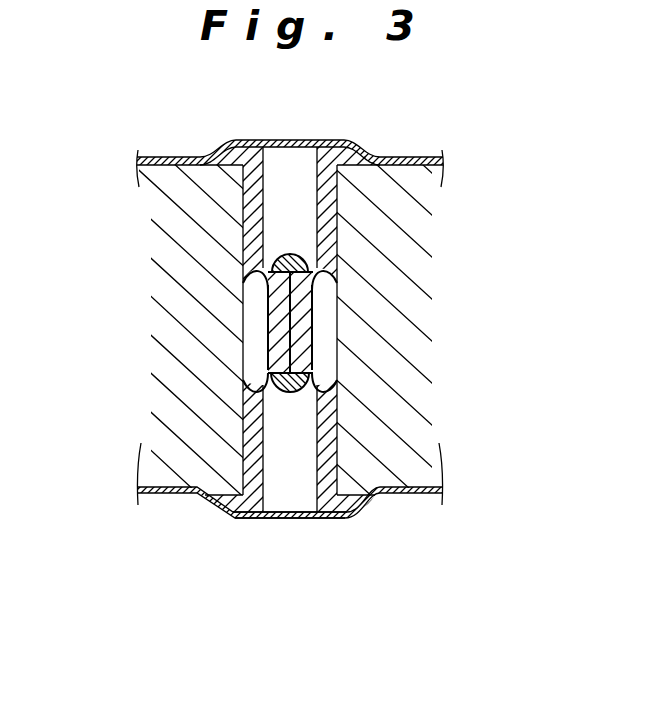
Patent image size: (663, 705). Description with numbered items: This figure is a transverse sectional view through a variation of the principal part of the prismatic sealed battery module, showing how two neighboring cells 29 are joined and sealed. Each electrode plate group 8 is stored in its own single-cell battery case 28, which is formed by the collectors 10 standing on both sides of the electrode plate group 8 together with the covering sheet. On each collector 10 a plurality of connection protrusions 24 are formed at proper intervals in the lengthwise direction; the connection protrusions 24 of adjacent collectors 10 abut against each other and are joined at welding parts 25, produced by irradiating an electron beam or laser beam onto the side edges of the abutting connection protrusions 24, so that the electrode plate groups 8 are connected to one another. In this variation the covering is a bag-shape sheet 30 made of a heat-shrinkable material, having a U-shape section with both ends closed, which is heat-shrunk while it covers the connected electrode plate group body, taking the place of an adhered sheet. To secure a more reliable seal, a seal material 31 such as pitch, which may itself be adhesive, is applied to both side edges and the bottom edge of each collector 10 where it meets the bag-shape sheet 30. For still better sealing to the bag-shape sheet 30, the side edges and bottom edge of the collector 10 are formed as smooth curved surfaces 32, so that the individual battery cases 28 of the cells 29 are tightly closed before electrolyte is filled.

The electrode plate group 8 is at (163, 317).
The collector 10 is at (300, 518).
The connection protrusion 24 is at (300, 357).
The welding part 25 is at (308, 259).
The battery case 28 is at (208, 496).
The cell 29 is at (134, 520).
The bag-shape sheet 30 is at (185, 160).
The seal material 31 is at (237, 145).
The smooth curved surface 32 is at (230, 147).